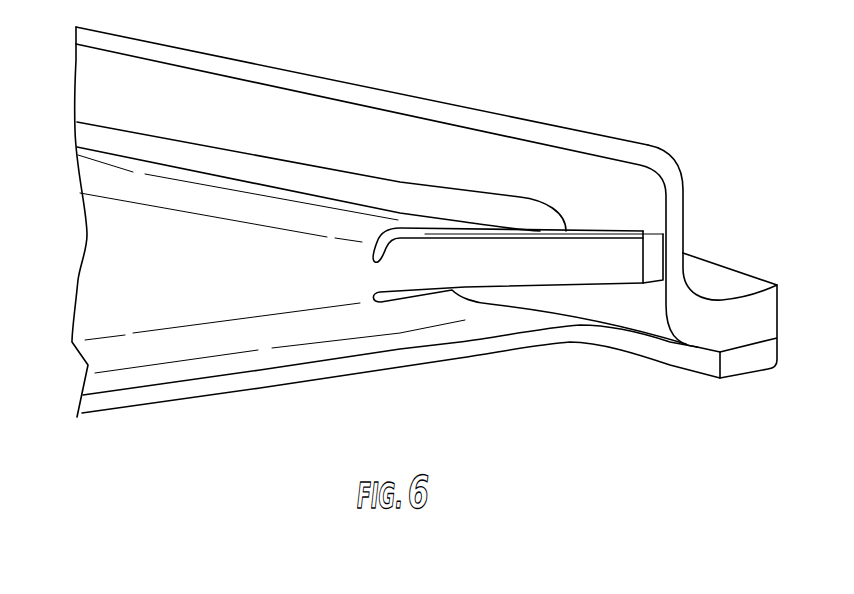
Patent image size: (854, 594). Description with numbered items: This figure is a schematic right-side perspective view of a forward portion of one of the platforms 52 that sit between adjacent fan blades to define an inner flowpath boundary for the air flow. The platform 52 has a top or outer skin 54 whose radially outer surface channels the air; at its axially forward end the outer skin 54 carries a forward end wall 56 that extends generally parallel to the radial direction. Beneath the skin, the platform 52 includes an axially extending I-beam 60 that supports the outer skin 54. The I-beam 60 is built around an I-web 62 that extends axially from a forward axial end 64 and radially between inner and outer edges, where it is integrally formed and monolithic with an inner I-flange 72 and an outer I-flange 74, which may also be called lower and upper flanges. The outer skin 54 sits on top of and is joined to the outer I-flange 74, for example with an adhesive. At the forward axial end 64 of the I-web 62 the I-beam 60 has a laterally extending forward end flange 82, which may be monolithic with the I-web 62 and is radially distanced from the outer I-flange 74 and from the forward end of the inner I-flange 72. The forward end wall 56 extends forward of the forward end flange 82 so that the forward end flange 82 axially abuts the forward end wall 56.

The platform 52 is at (461, 73).
The outer skin 54 is at (328, 76).
The forward end wall 56 is at (684, 203).
The I-beam 60 is at (62, 238).
The I-web 62 is at (188, 282).
The forward axial end 64 is at (645, 377).
The inner I-flange 72 is at (433, 338).
The outer I-flange 74 is at (162, 157).
The forward end flange 82 is at (648, 258).